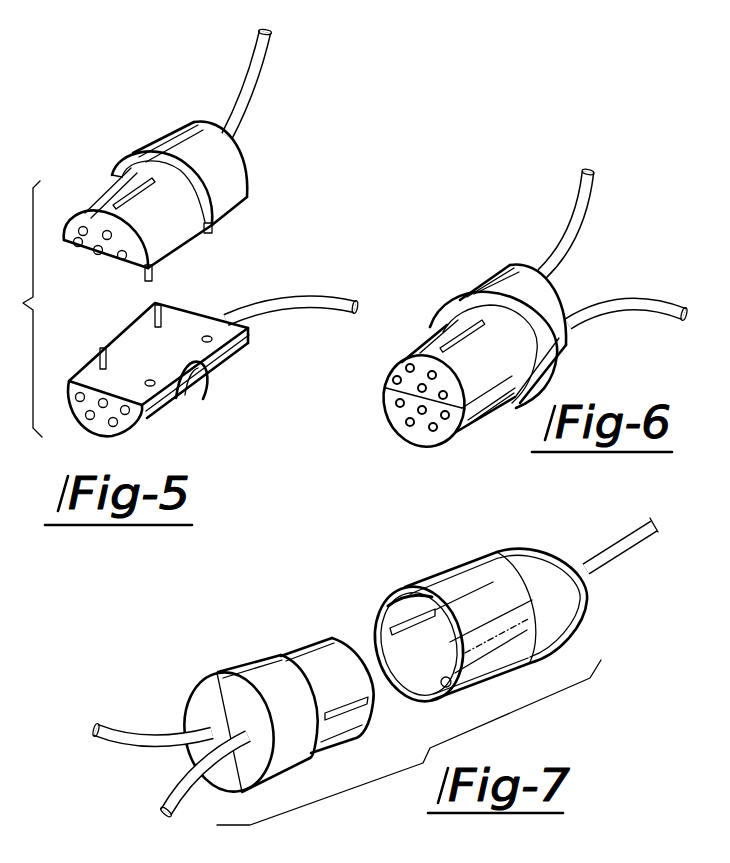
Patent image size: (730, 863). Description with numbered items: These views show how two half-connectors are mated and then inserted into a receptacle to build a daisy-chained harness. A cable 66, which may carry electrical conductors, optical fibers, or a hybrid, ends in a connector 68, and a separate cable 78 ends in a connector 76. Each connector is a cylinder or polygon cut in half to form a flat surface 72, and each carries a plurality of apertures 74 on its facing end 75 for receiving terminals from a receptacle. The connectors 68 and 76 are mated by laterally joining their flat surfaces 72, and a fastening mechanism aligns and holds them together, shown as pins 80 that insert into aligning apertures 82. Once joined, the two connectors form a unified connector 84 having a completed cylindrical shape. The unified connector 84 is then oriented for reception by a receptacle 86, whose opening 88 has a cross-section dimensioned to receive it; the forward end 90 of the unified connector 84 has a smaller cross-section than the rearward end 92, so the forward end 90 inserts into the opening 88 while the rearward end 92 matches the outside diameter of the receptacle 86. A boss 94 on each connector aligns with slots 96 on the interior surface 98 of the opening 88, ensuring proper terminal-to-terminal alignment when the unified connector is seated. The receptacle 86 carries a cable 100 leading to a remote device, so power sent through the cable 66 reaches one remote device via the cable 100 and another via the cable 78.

In FIG. 5, the cable 66 is at (255, 106).
In FIG. 6, the cable 66 is at (572, 197).
In FIG. 7, the cable 66 is at (114, 722).
In FIG. 5, the connector 68 is at (98, 206).
In FIG. 6, the connector 68 is at (446, 298).
In FIG. 5, the flat surface 72 is at (94, 253).
In FIG. 5, the apertures 74 is at (66, 240).
In FIG. 6, the apertures 74 is at (432, 428).
In FIG. 5, the facing end 75 is at (102, 258).
In FIG. 6, the facing end 75 is at (397, 381).
In FIG. 5, the connector 76 is at (166, 400).
In FIG. 6, the connector 76 is at (478, 408).
In FIG. 5, the cable 78 is at (295, 318).
In FIG. 6, the cable 78 is at (640, 302).
In FIG. 7, the cable 78 is at (175, 795).
In FIG. 5, the pins 80 is at (208, 234).
In FIG. 5, the aligning apertures 82 is at (203, 339).
In FIG. 6, the unified connector 84 is at (427, 288).
In FIG. 7, the unified connector 84 is at (298, 628).
In FIG. 7, the receptacle 86 is at (450, 563).
In FIG. 7, the opening 88 is at (418, 682).
In FIG. 7, the forward end 90 is at (316, 642).
In FIG. 7, the rearward end 92 is at (247, 666).
In FIG. 7, the boss 94 is at (345, 728).
In FIG. 7, the slots 96 is at (432, 618).
In FIG. 7, the interior surface 98 is at (451, 697).
In FIG. 7, the cable 100 is at (600, 560).